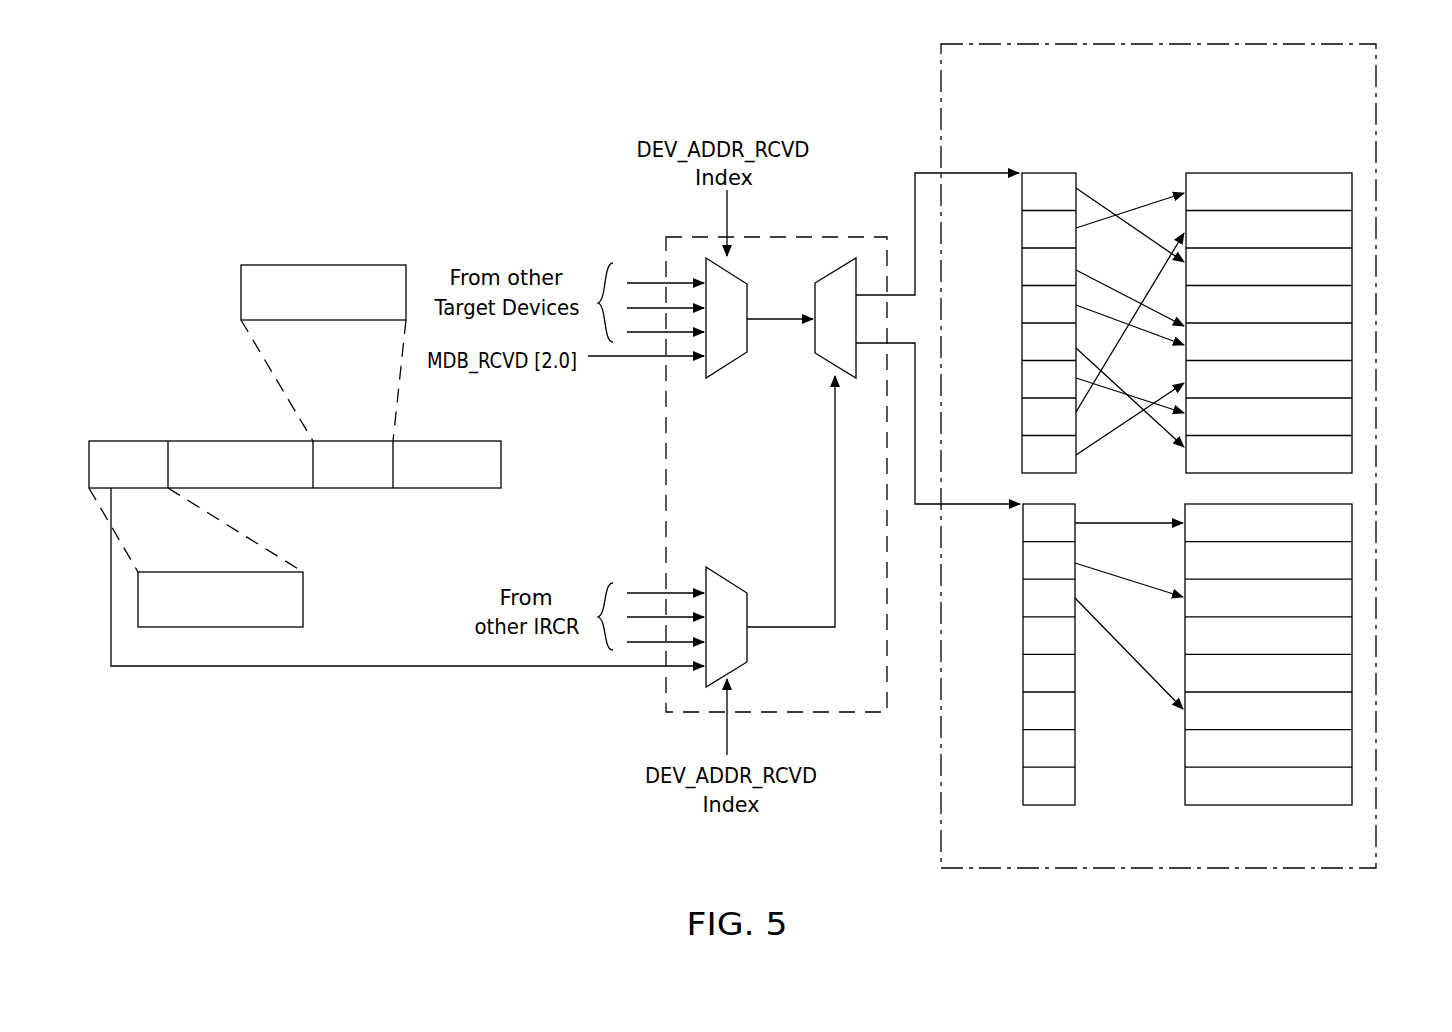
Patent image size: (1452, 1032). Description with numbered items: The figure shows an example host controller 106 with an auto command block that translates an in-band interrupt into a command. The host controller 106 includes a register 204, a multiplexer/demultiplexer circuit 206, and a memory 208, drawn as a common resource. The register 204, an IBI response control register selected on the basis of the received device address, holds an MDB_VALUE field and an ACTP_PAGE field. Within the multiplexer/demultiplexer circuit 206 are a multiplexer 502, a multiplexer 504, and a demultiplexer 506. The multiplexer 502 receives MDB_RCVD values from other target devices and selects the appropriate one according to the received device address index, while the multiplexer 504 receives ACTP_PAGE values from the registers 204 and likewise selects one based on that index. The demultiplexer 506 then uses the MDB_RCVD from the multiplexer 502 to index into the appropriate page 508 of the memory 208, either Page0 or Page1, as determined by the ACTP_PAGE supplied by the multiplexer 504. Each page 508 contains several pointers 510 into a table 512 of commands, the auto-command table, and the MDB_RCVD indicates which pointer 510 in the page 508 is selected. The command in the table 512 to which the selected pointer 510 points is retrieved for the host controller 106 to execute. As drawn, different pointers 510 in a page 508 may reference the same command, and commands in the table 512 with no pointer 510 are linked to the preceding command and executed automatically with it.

The host controller 106 is at (755, 42).
The register 204 is at (337, 488).
The multiplexer/demultiplexer circuit 206 is at (827, 696).
The memory 208 is at (1130, 868).
The multiplexer 502 is at (728, 364).
The multiplexer 504 is at (730, 582).
The demultiplexer 506 is at (830, 274).
The page 508 is at (1078, 183).
The pointer 510 is at (1150, 204).
The table 512 is at (1352, 305).